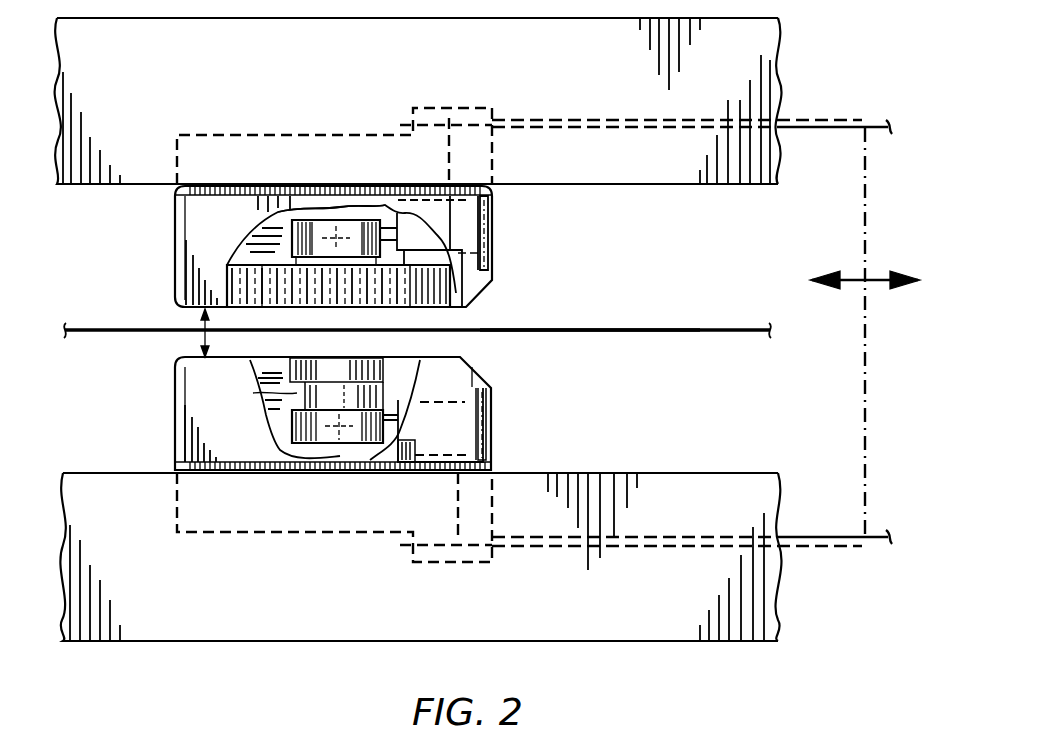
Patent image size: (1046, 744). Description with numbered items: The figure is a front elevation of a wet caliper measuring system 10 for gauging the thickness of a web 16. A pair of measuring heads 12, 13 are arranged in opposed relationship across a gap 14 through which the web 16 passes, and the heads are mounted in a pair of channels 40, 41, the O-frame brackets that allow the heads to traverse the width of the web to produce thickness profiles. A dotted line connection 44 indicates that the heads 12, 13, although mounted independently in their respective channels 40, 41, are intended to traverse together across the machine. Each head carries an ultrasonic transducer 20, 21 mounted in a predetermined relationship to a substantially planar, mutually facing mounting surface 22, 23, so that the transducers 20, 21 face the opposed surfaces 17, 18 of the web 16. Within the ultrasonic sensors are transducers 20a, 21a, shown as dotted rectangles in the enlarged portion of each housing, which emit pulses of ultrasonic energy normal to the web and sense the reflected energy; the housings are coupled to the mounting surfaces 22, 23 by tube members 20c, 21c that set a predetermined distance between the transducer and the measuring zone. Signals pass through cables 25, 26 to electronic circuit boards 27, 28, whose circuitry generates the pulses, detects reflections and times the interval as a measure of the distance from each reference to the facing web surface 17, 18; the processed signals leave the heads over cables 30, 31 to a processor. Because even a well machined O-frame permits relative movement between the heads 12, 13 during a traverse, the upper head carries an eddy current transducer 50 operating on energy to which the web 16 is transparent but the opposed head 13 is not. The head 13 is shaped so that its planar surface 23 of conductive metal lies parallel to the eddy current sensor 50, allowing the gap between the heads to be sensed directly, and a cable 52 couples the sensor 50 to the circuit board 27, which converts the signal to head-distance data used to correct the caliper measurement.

The measuring system 10 is at (756, 269).
The measuring head 12 is at (175, 247).
The measuring head 13 is at (176, 420).
The gap 14 is at (203, 330).
The web 16 is at (612, 332).
The opposed surface of the web 17 is at (630, 330).
The opposed surface of the web 18 is at (535, 332).
The ultrasonic transducer 20 is at (292, 222).
The transducer 20a is at (344, 200).
The tube member 20c is at (336, 260).
The ultrasonic transducer 21 is at (290, 437).
The transducer 21a is at (302, 470).
The tube member 21c is at (253, 393).
The mounting surface 22 is at (400, 310).
The mounting surface 23 is at (420, 358).
The cable 25 is at (398, 215).
The cable 26 is at (404, 470).
The electronic circuit board 27 is at (447, 243).
The electronic circuit board 28 is at (415, 413).
The cable 30 is at (842, 128).
The cable 31 is at (808, 537).
The channel 40 is at (280, 87).
The channel 41 is at (254, 606).
The dotted line connection 44 is at (800, 120).
The eddy current transducer 50 is at (240, 283).
The cable 52 is at (410, 265).